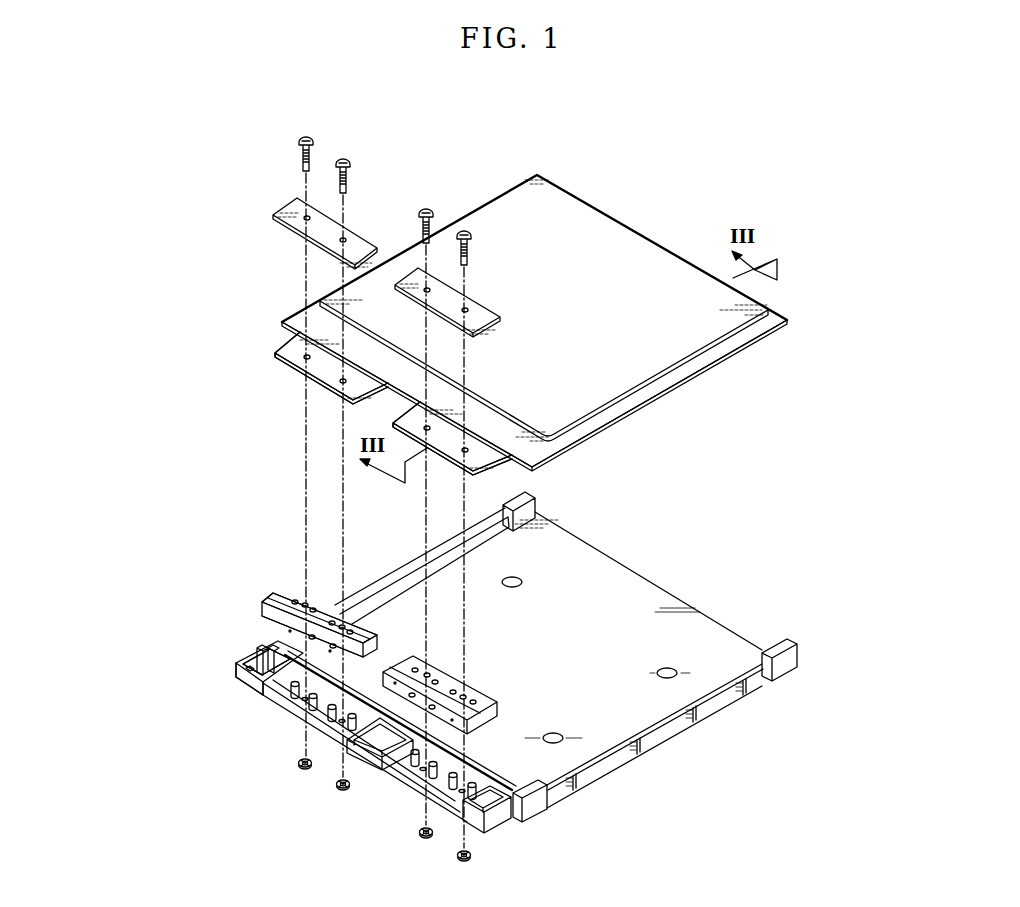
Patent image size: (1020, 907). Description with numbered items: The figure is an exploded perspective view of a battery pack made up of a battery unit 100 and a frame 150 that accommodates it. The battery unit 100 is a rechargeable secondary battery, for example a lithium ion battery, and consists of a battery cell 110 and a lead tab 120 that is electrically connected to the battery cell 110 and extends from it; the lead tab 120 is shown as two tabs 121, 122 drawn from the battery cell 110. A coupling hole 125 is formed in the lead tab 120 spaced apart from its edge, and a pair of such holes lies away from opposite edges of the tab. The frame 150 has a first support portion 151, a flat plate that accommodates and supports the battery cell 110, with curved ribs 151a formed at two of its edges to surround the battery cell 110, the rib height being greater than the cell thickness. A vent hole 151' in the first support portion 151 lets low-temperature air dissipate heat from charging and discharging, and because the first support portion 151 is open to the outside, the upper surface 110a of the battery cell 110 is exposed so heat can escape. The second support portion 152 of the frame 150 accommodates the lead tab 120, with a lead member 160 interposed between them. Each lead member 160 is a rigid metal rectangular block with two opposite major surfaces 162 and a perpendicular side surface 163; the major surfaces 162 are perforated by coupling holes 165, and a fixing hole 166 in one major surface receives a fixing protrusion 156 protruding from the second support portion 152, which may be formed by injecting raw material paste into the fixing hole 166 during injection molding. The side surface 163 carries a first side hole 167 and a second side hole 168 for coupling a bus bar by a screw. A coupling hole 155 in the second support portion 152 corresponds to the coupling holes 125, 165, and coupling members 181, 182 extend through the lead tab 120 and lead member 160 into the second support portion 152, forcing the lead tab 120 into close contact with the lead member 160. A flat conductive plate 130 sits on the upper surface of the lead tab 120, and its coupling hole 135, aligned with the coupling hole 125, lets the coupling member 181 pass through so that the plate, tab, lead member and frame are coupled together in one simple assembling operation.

The battery unit 100 is at (640, 216).
The battery cell 110 is at (674, 373).
The upper surface 110a is at (590, 370).
The lead tab 120 is at (276, 353).
The first electrode tab 121 is at (393, 416).
The second electrode tab 122 is at (276, 353).
The coupling hole 125 is at (303, 359).
The conductive plate 130 is at (274, 213).
The coupling hole 135 is at (302, 216).
The frame 150 is at (651, 575).
The first support portion 151 is at (655, 738).
The vent hole 151' is at (606, 654).
The curved ribs 151a is at (727, 694).
The second support portion 152 is at (525, 814).
The coupling hole 155 is at (421, 772).
The fixing protrusion 156 is at (410, 767).
The lead member 160 is at (295, 590).
The major surfaces 162 is at (327, 613).
The side surface 163 is at (326, 628).
The coupling holes 165 is at (286, 612).
The fixing hole 166 is at (300, 597).
The first side hole 167 is at (287, 633).
The second side hole 168 is at (267, 637).
The coupling member 181 is at (302, 141).
The coupling member 182 is at (460, 860).